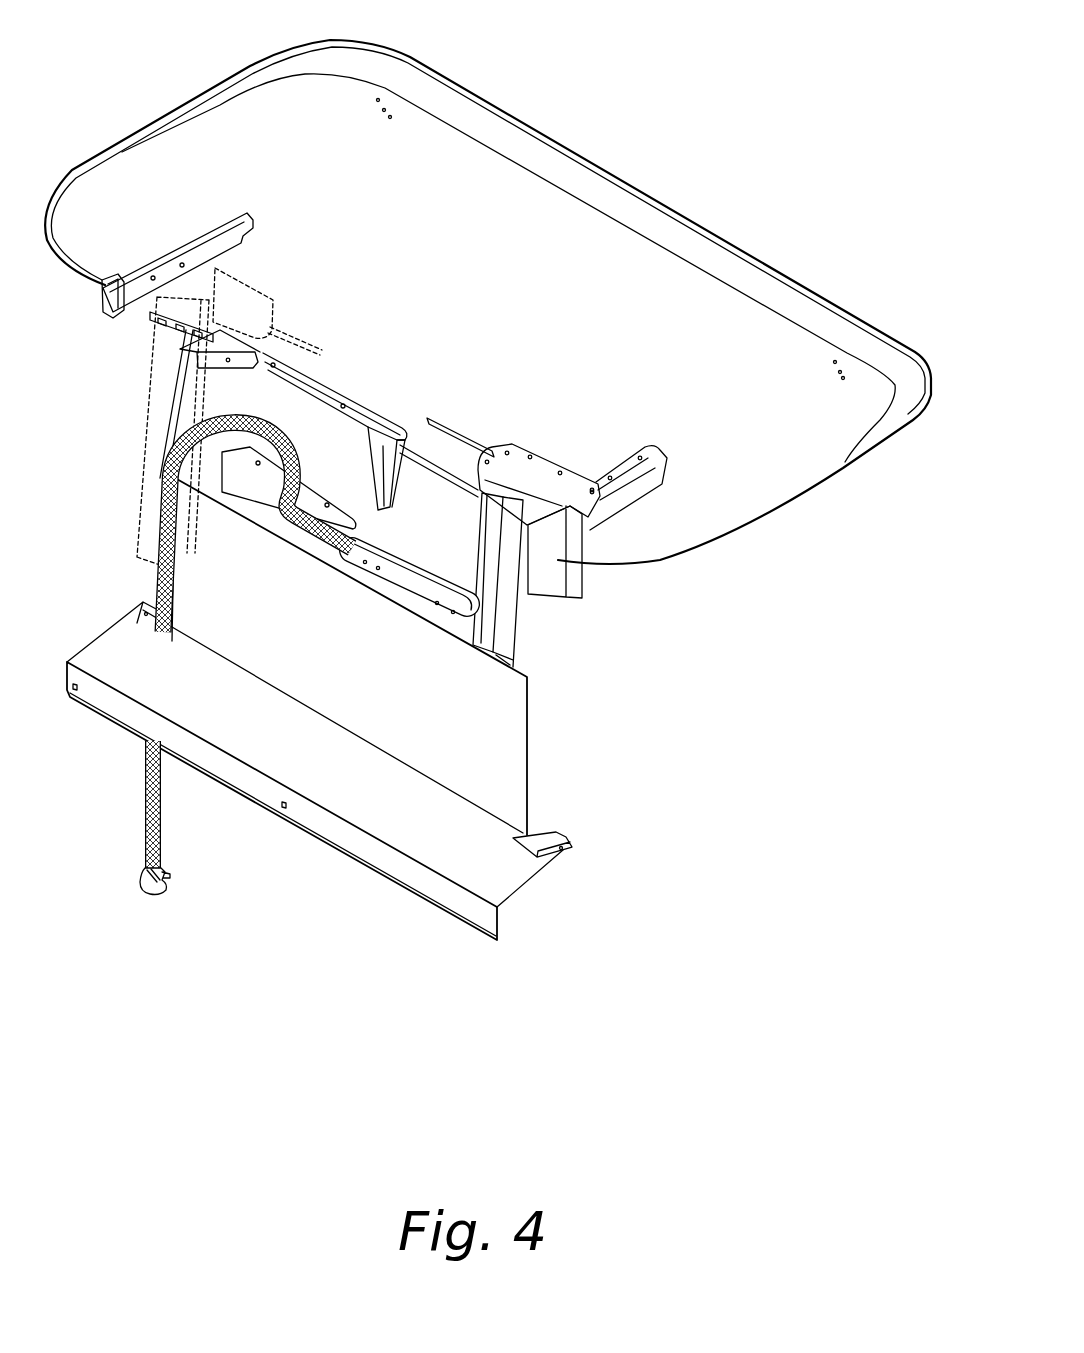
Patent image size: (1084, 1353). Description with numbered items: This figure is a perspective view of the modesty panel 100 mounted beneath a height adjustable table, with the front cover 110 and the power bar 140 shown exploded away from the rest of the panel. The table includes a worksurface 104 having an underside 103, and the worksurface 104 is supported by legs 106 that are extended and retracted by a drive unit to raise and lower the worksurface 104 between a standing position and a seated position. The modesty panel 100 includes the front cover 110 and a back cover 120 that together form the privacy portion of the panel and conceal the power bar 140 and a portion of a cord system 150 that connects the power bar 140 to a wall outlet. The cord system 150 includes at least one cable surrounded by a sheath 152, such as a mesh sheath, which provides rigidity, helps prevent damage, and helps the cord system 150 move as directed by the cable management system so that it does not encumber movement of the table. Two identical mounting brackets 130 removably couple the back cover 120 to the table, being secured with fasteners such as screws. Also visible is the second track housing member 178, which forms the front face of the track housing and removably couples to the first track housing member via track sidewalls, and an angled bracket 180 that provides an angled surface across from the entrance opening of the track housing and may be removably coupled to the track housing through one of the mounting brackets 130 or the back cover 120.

The modesty panel 100 is at (518, 617).
The underside 103 is at (722, 505).
The worksurface 104 is at (925, 368).
The legs 106 is at (567, 580).
The front cover 110 is at (527, 780).
The back cover 120 is at (517, 638).
The mounting bracket 130 is at (507, 660).
The power bar 140 is at (438, 570).
The cord system 150 is at (303, 527).
The sheath 152 is at (163, 570).
The second track housing member 178 is at (207, 400).
The angled bracket 180 is at (188, 366).